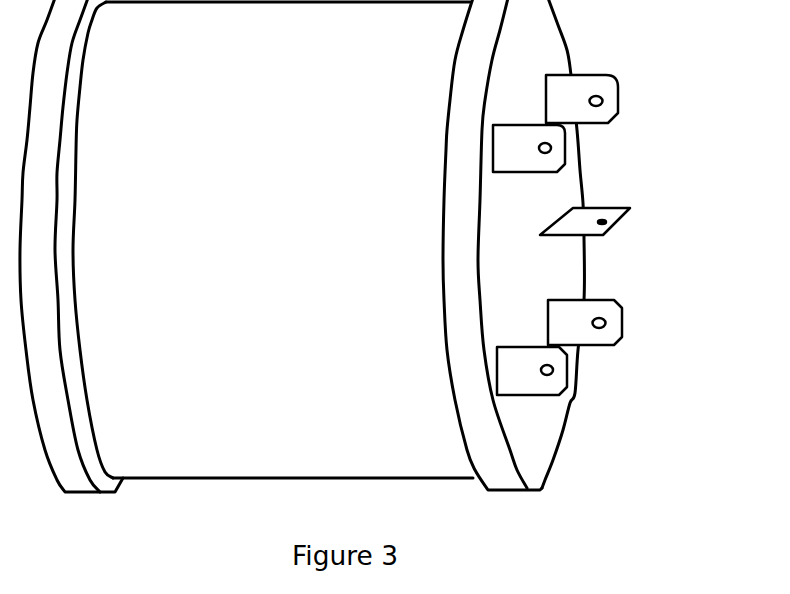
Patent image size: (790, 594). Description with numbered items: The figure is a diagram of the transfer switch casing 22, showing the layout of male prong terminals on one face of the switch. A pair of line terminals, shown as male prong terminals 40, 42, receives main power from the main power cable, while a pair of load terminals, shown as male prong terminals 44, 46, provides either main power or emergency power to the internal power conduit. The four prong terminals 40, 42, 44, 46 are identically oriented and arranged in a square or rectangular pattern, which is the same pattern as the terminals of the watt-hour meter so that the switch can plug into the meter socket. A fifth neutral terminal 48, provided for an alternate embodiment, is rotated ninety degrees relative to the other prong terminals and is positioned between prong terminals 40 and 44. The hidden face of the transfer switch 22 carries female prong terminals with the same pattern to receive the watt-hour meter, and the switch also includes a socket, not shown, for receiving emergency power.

The transfer switch casing 22 is at (302, 246).
The male prong terminal 40 is at (619, 101).
The male prong terminal 42 is at (566, 150).
The male prong terminal 44 is at (623, 328).
The male prong terminal 46 is at (568, 370).
The neutral terminal 48 is at (608, 233).